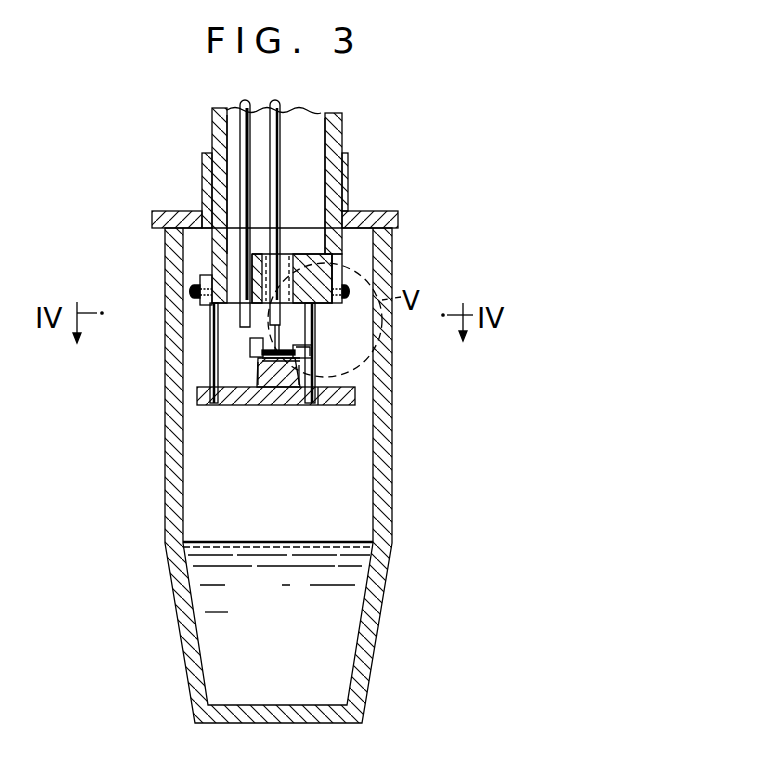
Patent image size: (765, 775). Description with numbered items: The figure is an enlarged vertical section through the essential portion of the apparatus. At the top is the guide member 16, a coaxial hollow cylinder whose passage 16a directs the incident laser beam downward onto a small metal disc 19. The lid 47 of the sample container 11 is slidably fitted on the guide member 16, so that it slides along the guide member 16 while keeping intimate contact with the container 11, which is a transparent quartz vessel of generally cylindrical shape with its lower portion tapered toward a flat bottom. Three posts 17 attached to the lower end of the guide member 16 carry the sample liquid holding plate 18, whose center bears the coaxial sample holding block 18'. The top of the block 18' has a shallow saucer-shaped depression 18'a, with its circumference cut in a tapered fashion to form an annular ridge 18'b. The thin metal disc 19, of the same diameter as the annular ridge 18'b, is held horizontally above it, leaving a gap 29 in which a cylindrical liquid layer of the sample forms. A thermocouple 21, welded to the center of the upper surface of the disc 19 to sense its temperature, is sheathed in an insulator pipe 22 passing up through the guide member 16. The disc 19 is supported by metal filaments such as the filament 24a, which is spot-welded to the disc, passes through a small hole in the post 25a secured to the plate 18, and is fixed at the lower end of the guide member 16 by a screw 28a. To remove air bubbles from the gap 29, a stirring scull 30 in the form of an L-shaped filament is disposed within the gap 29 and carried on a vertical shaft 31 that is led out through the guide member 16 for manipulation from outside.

The sample container 11 is at (393, 518).
The lid of the sample container 47 is at (367, 211).
The guide member 16 is at (341, 130).
The passage 16a is at (308, 122).
The vertical shaft 31 is at (243, 133).
The insulator pipe 22 is at (281, 182).
The screw 28a is at (348, 292).
The thermocouple 21 is at (252, 340).
The gap 29 is at (316, 378).
The posts 17 is at (216, 368).
The stirring scull 30 is at (260, 352).
The small metal disc 19 is at (313, 352).
The metal filament 24a is at (312, 349).
The sample liquid holding plate 18 is at (276, 412).
The post 25a is at (326, 406).
The sample holding block 18' is at (283, 412).
The depression 18'a is at (331, 416).
The annular ridge 18'b is at (243, 414).